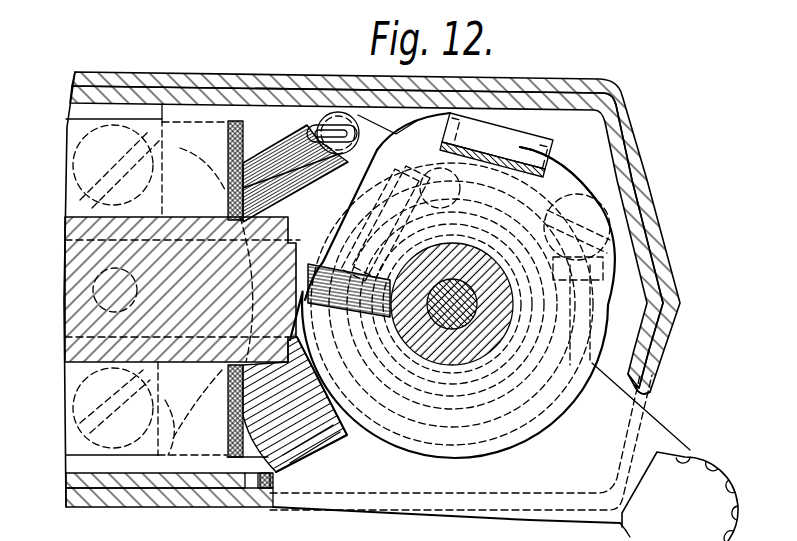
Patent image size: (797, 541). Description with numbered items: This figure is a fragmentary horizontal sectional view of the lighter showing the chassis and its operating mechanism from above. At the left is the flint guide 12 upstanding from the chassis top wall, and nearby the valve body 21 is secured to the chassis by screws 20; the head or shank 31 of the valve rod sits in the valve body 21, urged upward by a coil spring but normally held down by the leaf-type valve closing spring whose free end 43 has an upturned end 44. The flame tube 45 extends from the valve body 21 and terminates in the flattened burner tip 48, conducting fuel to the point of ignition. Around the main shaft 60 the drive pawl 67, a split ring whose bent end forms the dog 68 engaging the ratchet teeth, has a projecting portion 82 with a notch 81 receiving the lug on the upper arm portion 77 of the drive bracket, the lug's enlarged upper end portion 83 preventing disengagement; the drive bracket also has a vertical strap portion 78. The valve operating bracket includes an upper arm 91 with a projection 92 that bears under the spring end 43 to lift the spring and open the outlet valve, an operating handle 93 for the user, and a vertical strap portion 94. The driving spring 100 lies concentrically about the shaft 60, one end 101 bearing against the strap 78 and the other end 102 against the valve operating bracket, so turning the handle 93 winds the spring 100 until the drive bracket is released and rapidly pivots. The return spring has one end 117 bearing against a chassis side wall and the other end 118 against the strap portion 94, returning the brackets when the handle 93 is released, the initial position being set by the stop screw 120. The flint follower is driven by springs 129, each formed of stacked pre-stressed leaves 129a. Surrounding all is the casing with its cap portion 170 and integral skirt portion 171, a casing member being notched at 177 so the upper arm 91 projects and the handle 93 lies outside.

The flint guide 12 is at (66, 270).
The screws 20 is at (163, 200).
The valve body 21 is at (172, 422).
The head or shank 31 is at (77, 297).
The free end of valve closing spring 43 is at (285, 216).
The upturned end 44 is at (326, 450).
The flame or burner tube 45 is at (318, 186).
The burner tip 48 is at (328, 127).
The main shaft 60 is at (446, 330).
The drive pawl 67 is at (520, 428).
The pawl or dog 68 is at (308, 263).
The upper arm portion of drive bracket 77 is at (556, 407).
The vertical strap portion of drive bracket 78 is at (585, 297).
The notch 81 is at (520, 167).
The projecting portion of drive pawl 82 is at (572, 173).
The enlarged upper end portion of lug 83 is at (497, 137).
The upper arm of valve operating bracket 91 is at (650, 433).
The projection 92 is at (276, 488).
The operating handle 93 is at (717, 481).
The vertical strap portion of valve operating bracket 94 is at (373, 212).
The driving spring 100 is at (483, 390).
The end of driving spring 101 is at (560, 263).
The other end of driving spring 102 is at (443, 174).
The end of return spring 117 is at (257, 488).
The other end of return spring 118 is at (372, 143).
The screw 120 is at (618, 215).
The springs 129 is at (157, 455).
The leaves 129a is at (243, 121).
The cap member portion 170 is at (604, 88).
The skirt portion 171 is at (631, 106).
The notch 177 is at (646, 391).